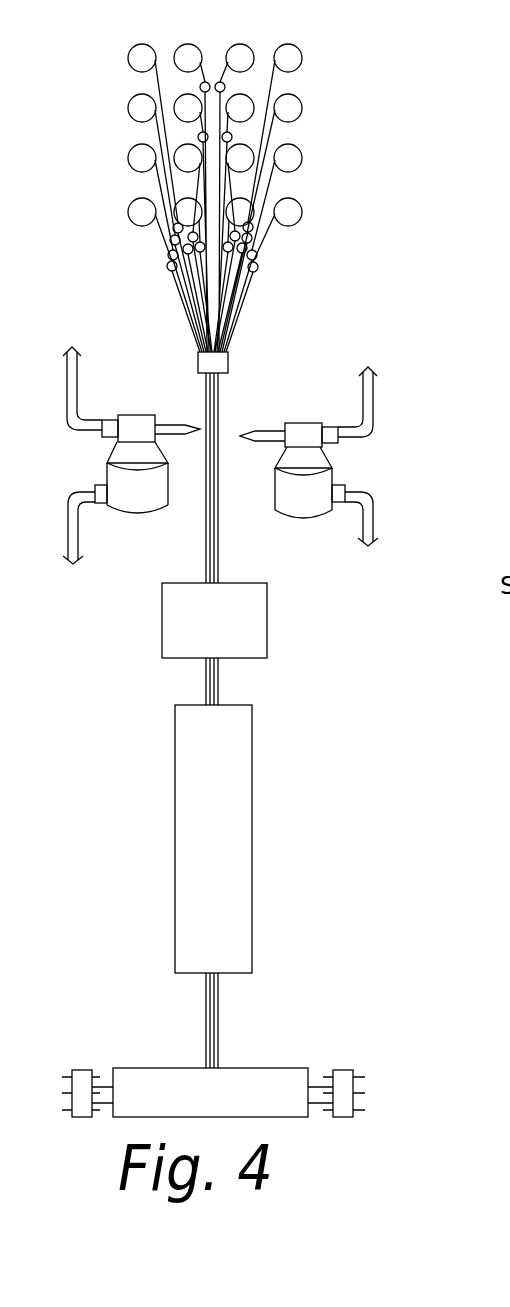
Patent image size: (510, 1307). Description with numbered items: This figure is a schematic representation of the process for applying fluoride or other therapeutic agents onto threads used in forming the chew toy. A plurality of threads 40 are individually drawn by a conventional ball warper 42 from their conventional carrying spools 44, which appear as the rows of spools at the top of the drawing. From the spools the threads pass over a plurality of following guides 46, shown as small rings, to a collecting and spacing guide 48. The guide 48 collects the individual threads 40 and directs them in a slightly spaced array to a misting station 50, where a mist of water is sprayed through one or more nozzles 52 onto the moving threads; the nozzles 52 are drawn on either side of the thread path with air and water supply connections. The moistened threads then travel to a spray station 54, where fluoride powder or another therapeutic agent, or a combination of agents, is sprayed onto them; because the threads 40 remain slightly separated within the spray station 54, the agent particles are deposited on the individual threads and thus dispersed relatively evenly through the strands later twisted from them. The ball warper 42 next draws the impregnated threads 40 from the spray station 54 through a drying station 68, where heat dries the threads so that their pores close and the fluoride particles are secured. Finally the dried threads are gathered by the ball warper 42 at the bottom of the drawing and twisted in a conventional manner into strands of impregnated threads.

The threads 40 is at (270, 137).
The ball warper 42 is at (277, 1080).
The carrying spools 44 is at (237, 43).
The following guides 46 is at (170, 267).
The collecting and spacing guide 48 is at (227, 350).
The misting station 50 is at (315, 357).
The nozzles 52 is at (185, 422).
The spray station 54 is at (268, 622).
The drying station 68 is at (252, 820).